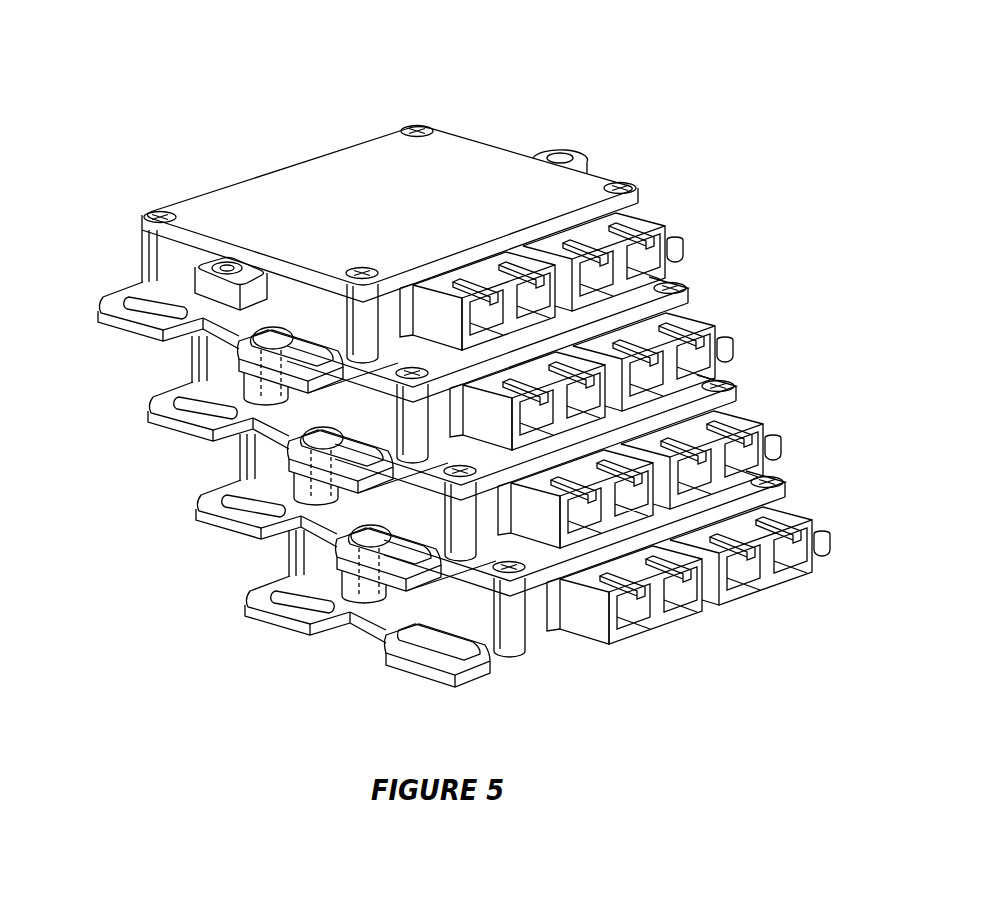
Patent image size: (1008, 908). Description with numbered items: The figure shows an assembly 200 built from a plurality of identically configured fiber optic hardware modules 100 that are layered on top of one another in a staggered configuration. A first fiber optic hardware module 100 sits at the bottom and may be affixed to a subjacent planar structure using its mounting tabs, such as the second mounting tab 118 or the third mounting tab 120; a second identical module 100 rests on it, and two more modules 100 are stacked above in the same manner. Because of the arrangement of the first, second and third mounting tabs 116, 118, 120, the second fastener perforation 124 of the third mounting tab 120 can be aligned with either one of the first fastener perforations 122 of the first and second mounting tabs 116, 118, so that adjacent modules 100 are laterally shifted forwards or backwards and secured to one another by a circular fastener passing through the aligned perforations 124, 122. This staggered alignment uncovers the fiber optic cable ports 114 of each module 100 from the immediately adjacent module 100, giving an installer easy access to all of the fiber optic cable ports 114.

The assembly 200 is at (226, 70).
The fiber optic hardware module 100 is at (637, 188).
The fiber optic cable port 114 is at (667, 245).
The first mounting tab 116 is at (461, 677).
The second mounting tab 118 is at (104, 323).
The third mounting tab 120 is at (353, 586).
The first fastener perforation 122 is at (412, 541).
The second fastener perforation 124 is at (226, 262).